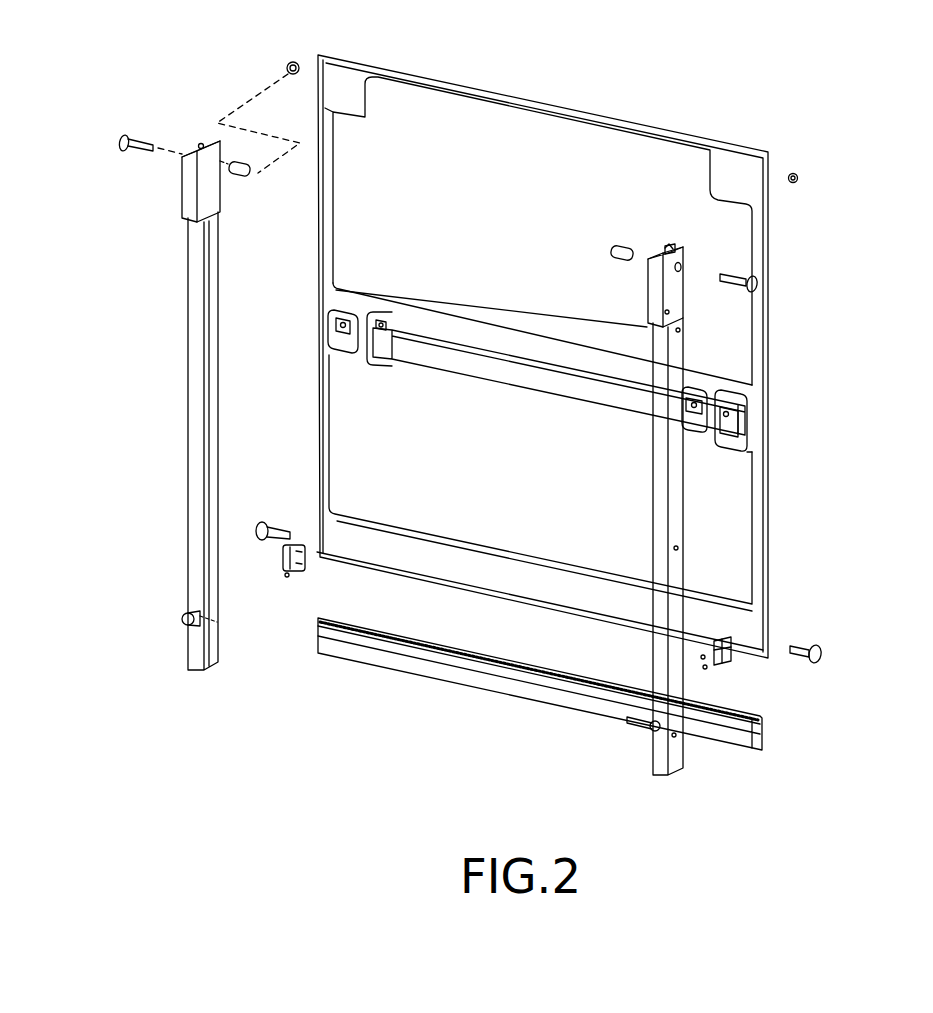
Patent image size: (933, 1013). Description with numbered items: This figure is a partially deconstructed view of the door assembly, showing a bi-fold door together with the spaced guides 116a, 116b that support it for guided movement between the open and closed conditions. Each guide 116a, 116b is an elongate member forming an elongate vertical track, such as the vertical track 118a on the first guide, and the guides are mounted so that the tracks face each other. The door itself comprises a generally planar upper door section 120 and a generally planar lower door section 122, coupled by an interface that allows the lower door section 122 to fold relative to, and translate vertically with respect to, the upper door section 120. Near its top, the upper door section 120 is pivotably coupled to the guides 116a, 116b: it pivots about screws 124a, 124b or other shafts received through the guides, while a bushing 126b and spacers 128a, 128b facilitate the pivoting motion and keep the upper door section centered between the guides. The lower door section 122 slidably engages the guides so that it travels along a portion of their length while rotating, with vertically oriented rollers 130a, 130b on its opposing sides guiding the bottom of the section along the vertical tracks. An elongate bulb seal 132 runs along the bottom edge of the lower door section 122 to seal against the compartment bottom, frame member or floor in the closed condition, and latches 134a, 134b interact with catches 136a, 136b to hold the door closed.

The guide 116a is at (683, 762).
The guide 116b is at (188, 610).
The elongate vertical track 118a is at (672, 243).
The upper door section 120 is at (742, 238).
The lower door section 122 is at (742, 524).
The screw 124a is at (752, 290).
The screw 124b is at (128, 151).
The bushing 126b is at (297, 60).
The spacer 128a is at (621, 244).
The spacer 128b is at (241, 177).
The roller 130a is at (823, 655).
The roller 130b is at (265, 522).
The elongate bulb seal 132 is at (756, 734).
The latch 134a is at (728, 666).
The latch 134b is at (302, 572).
The catch 136a is at (642, 724).
The catch 136b is at (207, 632).